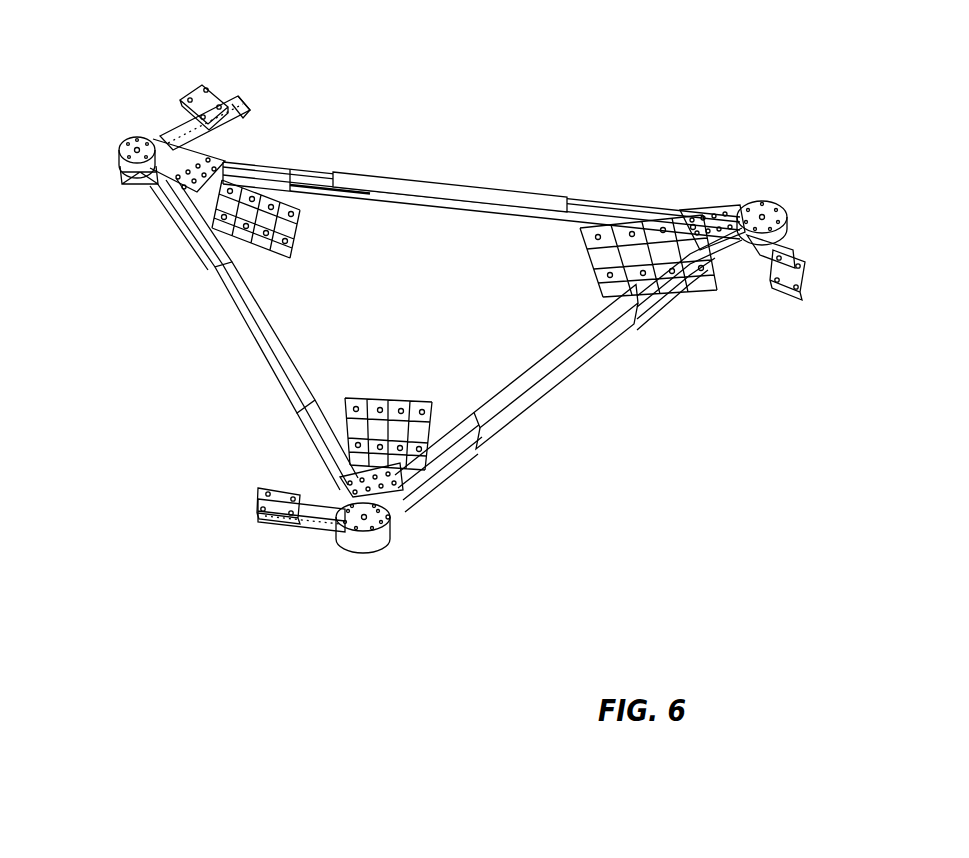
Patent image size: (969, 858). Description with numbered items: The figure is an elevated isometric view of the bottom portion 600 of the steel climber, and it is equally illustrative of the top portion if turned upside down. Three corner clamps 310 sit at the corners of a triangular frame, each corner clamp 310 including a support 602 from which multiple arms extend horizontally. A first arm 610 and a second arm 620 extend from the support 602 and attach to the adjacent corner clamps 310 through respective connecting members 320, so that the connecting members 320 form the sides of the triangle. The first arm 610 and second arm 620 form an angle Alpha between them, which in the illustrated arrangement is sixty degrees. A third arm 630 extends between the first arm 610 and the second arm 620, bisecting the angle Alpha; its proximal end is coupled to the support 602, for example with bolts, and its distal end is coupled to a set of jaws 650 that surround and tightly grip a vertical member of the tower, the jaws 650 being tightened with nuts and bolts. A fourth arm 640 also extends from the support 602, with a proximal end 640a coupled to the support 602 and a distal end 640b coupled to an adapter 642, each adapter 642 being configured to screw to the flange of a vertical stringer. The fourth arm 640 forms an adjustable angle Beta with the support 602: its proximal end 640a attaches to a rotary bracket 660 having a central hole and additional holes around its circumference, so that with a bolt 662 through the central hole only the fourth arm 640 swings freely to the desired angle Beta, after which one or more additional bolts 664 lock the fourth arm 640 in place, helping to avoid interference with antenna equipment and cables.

The bottom portion 600 is at (499, 108).
The corner clamp 310 is at (108, 140).
The connecting member 320 is at (448, 198).
The support 602 is at (158, 158).
The first arm 610 is at (282, 178).
The second arm 620 is at (210, 238).
The third arm 630 is at (178, 208).
The fourth arm 640 is at (173, 120).
The proximal end 640a is at (123, 180).
The distal end 640b is at (230, 113).
The adapter 642 is at (205, 102).
The jaws 650 is at (572, 262).
The rotary bracket 660 is at (367, 537).
The bolt 662 is at (368, 522).
The additional bolt 664 is at (392, 518).
The angle Alpha is at (273, 310).
The angle Beta is at (308, 510).